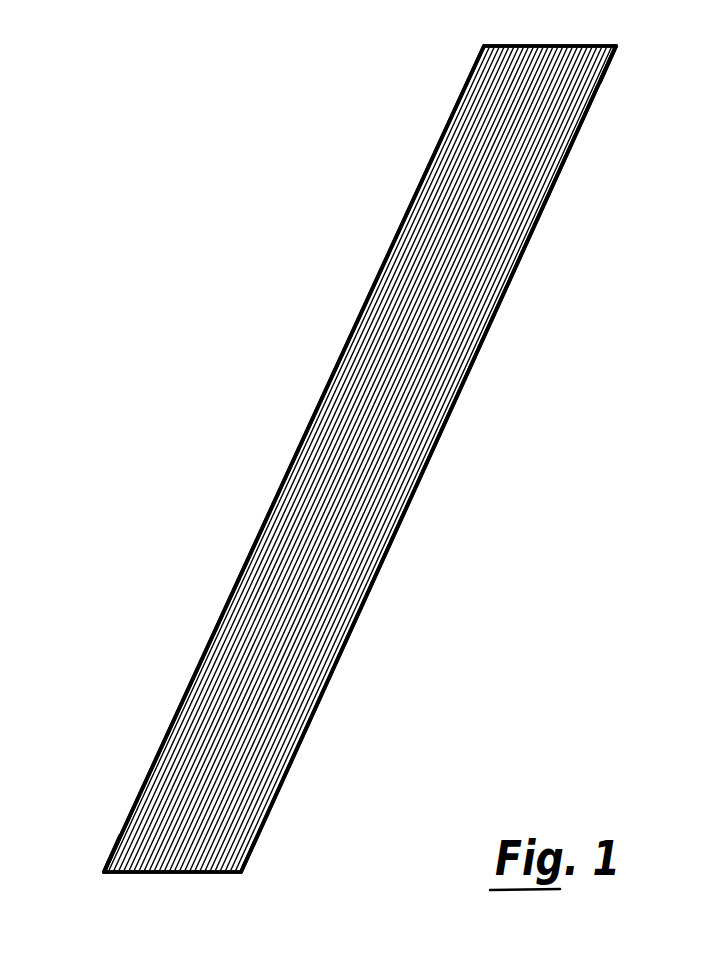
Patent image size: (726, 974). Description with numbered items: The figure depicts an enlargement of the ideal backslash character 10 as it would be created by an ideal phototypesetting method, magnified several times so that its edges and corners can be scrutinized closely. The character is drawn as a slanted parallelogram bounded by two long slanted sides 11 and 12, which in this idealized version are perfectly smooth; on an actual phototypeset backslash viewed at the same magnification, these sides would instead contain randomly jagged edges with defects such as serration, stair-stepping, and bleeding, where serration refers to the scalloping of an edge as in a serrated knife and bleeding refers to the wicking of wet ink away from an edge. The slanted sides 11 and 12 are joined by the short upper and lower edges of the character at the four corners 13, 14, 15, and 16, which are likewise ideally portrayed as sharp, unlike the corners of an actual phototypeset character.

The backslash character 10 is at (293, 147).
The slanted side 11 is at (317, 403).
The slanted side 12 is at (437, 452).
The corner 13 is at (486, 46).
The corner 14 is at (616, 46).
The corner 15 is at (242, 873).
The corner 16 is at (104, 873).